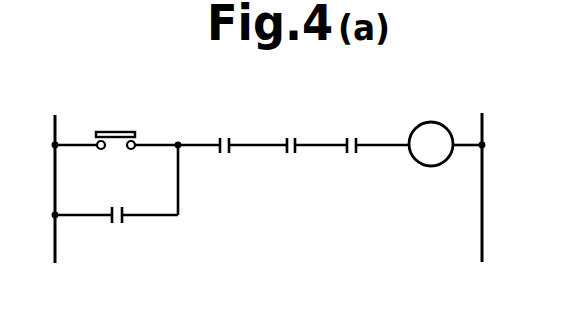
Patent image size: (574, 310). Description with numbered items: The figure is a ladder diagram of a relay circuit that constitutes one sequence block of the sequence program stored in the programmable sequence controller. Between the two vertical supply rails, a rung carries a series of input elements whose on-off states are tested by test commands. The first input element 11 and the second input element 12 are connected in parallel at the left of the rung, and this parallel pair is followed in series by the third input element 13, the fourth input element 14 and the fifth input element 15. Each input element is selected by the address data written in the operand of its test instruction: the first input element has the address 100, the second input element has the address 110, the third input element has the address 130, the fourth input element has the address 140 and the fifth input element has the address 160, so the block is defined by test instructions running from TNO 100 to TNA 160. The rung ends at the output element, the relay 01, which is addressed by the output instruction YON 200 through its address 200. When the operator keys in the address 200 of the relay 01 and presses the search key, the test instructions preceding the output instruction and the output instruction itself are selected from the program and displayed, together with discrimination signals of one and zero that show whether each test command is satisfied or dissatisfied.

The input element 11 is at (115, 124).
The address 100 is at (115, 156).
The input element 12 is at (117, 198).
The address 110 is at (117, 238).
The input element 13 is at (221, 129).
The address 130 is at (221, 169).
The input element 14 is at (290, 129).
The address 140 is at (290, 169).
The input element 15 is at (350, 129).
The address 160 is at (355, 169).
The relay 01 is at (431, 128).
The address 200 is at (429, 183).